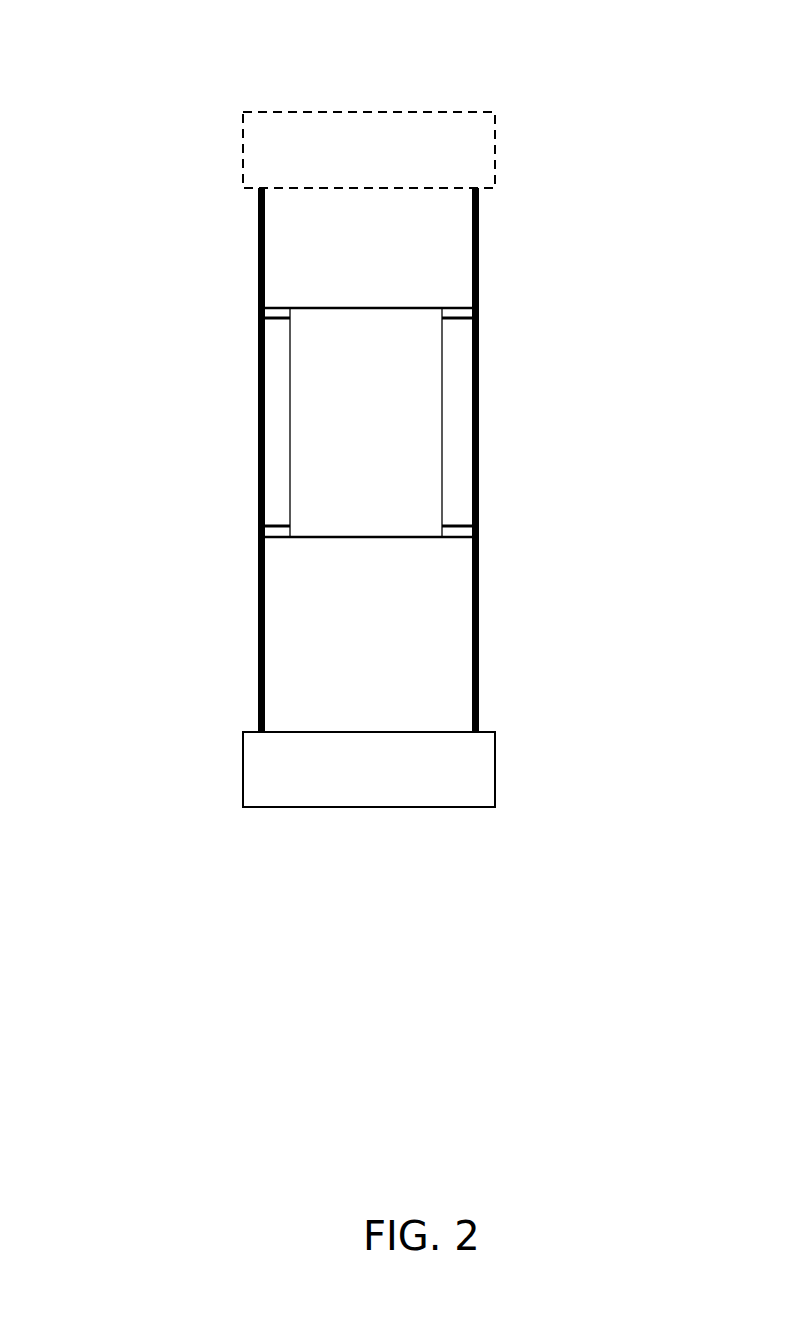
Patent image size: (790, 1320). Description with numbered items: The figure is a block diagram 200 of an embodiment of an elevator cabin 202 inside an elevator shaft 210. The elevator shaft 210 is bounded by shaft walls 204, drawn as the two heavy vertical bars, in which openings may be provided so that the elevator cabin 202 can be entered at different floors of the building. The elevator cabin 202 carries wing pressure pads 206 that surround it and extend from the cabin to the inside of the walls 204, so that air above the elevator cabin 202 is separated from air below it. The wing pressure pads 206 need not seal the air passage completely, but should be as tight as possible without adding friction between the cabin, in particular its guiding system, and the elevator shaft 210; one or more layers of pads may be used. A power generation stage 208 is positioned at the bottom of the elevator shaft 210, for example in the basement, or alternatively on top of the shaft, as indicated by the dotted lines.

The block diagram 200 is at (122, 77).
The elevator cabin 202 is at (386, 383).
The shaft walls 204 is at (247, 272).
The wing pressure pads 206 is at (267, 328).
The power generation stage 208 is at (388, 788).
The elevator shaft 210 is at (391, 258).